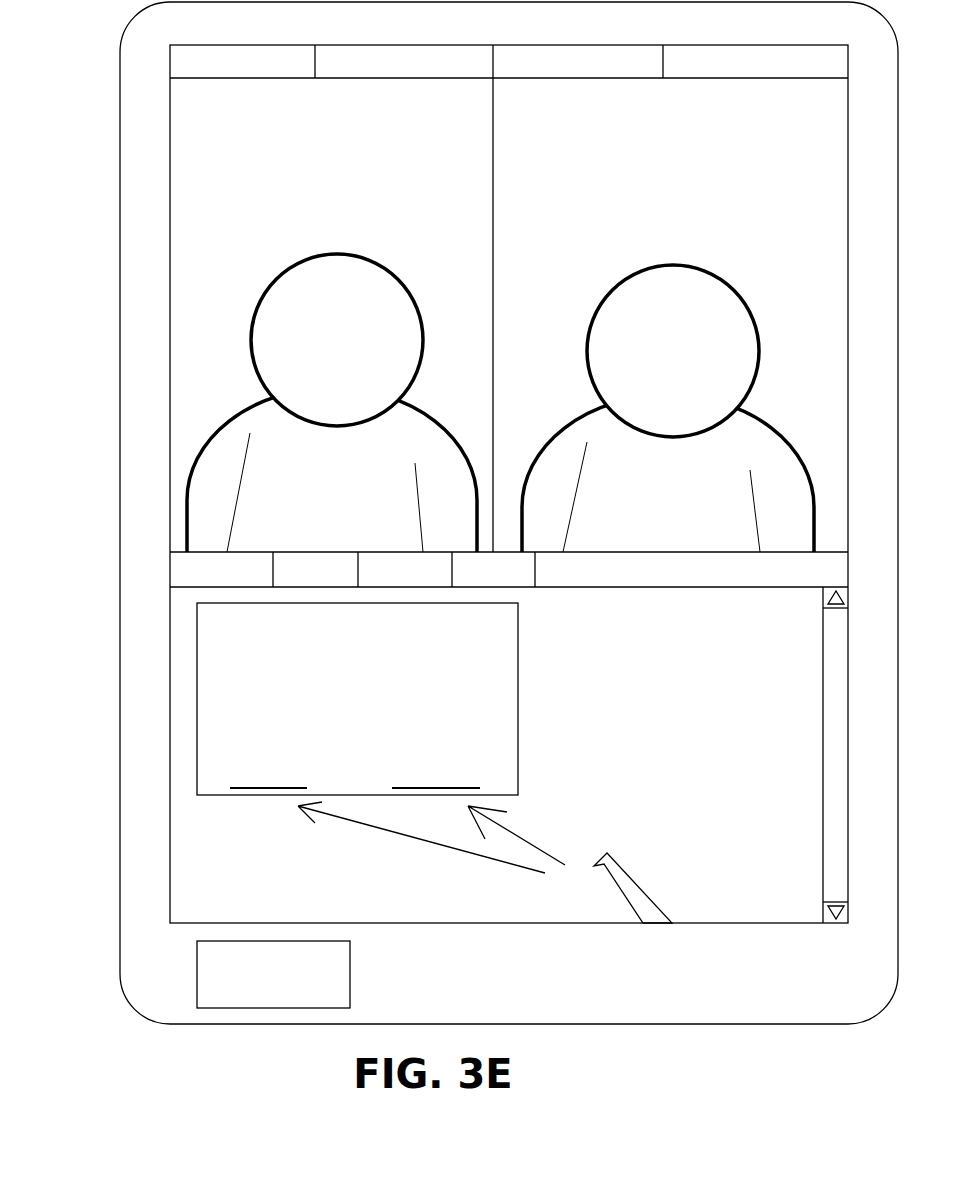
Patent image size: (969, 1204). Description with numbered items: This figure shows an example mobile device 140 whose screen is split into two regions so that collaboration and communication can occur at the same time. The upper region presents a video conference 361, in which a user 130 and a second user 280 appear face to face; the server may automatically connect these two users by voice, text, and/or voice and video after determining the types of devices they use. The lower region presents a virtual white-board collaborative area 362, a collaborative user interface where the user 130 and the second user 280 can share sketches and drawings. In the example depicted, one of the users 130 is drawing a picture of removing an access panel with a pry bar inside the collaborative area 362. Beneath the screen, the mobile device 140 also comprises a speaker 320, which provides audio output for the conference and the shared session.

The mobile device 140 is at (486, 993).
The video conference 361 is at (441, 298).
The virtual white-board collaborative area 362 is at (113, 595).
The user 130 is at (322, 494).
The second user 280 is at (660, 496).
The speaker 320 is at (256, 998).